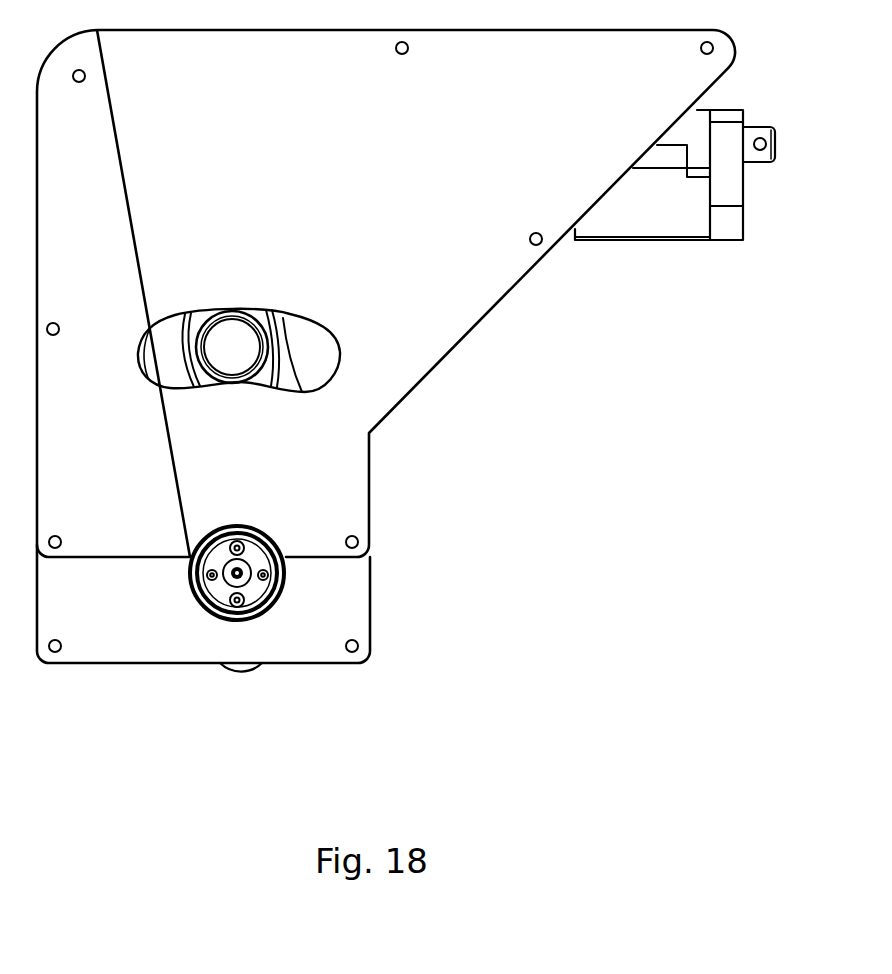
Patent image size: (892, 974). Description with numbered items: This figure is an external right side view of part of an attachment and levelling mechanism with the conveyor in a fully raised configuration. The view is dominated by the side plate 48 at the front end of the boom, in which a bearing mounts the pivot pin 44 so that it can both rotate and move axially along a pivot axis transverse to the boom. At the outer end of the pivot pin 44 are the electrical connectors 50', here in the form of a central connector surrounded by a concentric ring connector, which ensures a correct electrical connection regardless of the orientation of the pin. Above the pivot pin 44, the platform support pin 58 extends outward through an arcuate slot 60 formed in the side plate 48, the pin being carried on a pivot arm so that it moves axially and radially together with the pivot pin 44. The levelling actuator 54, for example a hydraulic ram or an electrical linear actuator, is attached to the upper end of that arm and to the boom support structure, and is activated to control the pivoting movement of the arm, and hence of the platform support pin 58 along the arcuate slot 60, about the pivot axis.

The pivot pin 44 is at (218, 593).
The side plate 48 is at (462, 322).
The electrical connectors 50' is at (339, 606).
The levelling actuator 54 is at (732, 185).
The platform support pin 58 is at (225, 325).
The arcuate slot 60 is at (300, 315).